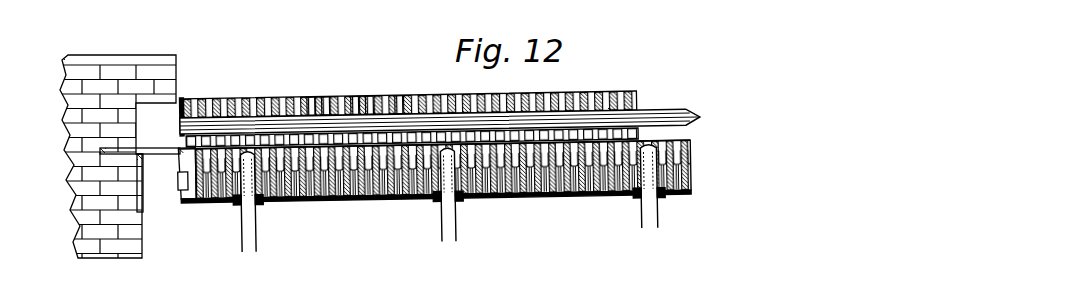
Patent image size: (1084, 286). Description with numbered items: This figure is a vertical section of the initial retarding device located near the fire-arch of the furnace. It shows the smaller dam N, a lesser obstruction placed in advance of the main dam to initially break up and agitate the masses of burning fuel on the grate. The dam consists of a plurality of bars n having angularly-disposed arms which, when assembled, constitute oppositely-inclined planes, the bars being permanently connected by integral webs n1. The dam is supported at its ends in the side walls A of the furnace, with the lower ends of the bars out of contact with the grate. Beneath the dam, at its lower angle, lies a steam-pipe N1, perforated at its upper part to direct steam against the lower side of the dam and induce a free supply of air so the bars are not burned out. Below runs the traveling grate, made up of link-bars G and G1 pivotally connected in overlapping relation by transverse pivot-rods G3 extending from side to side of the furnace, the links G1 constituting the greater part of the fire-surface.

The side wall A is at (68, 168).
The smaller dam N is at (408, 104).
The steam-pipe N1 is at (697, 106).
The bars n is at (400, 98).
The integral webs n1 is at (330, 98).
The link-bars G is at (252, 204).
The link-bars G1 is at (559, 193).
The transverse pivot-rods G3 is at (170, 155).